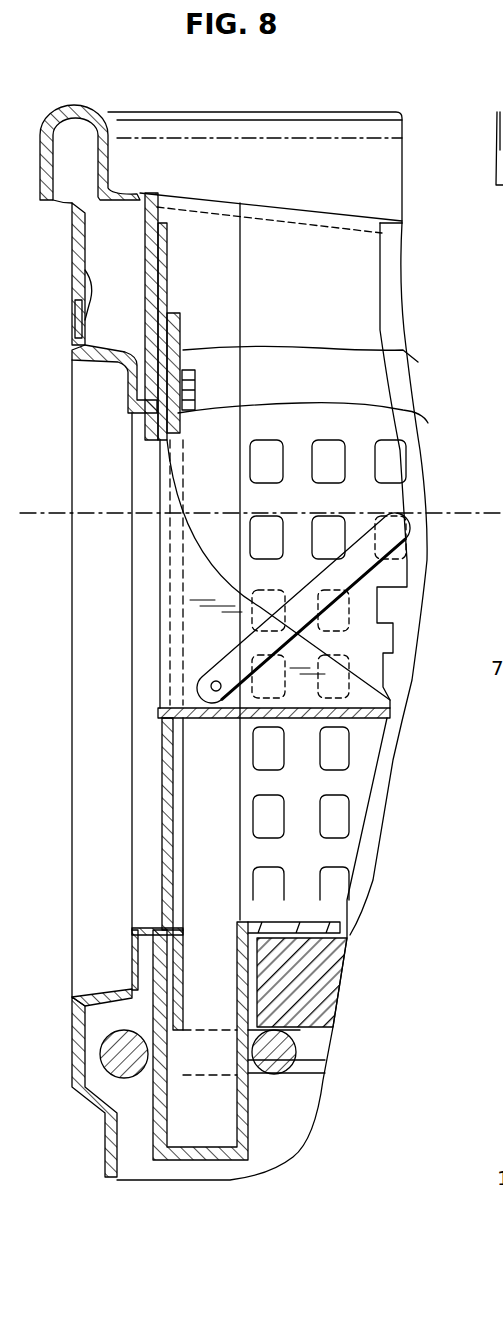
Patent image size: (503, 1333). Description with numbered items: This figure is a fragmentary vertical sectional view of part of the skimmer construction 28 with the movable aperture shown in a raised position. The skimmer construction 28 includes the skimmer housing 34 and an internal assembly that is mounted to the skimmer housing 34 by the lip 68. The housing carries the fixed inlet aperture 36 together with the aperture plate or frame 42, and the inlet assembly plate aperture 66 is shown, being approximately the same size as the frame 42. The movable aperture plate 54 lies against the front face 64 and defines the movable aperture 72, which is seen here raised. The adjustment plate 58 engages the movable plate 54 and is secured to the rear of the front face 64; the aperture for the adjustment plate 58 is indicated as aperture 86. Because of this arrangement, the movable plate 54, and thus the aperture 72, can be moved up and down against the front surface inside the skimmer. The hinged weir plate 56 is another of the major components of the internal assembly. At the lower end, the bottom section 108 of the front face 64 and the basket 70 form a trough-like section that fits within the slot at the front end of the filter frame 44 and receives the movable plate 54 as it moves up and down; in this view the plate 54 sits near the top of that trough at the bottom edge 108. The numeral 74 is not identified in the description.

The skimmer construction 28 is at (298, 111).
The skimmer housing 34 is at (103, 1139).
The fixed inlet aperture 36 is at (86, 283).
The frame 42 is at (70, 365).
The filter frame 44 is at (307, 1066).
The movable aperture plate 54 is at (168, 238).
The hinged weir plate 56 is at (392, 532).
The adjustment plate 58 is at (278, 701).
The front face 64 is at (157, 200).
The inlet assembly plate aperture 66 is at (157, 930).
The lip 68 is at (40, 193).
The basket 70 is at (383, 253).
The movable aperture 72 is at (160, 440).
The support plate 74 is at (200, 688).
The aperture for the adjustment plate 86 is at (311, 651).
The bottom section of the front face 108 is at (275, 1178).